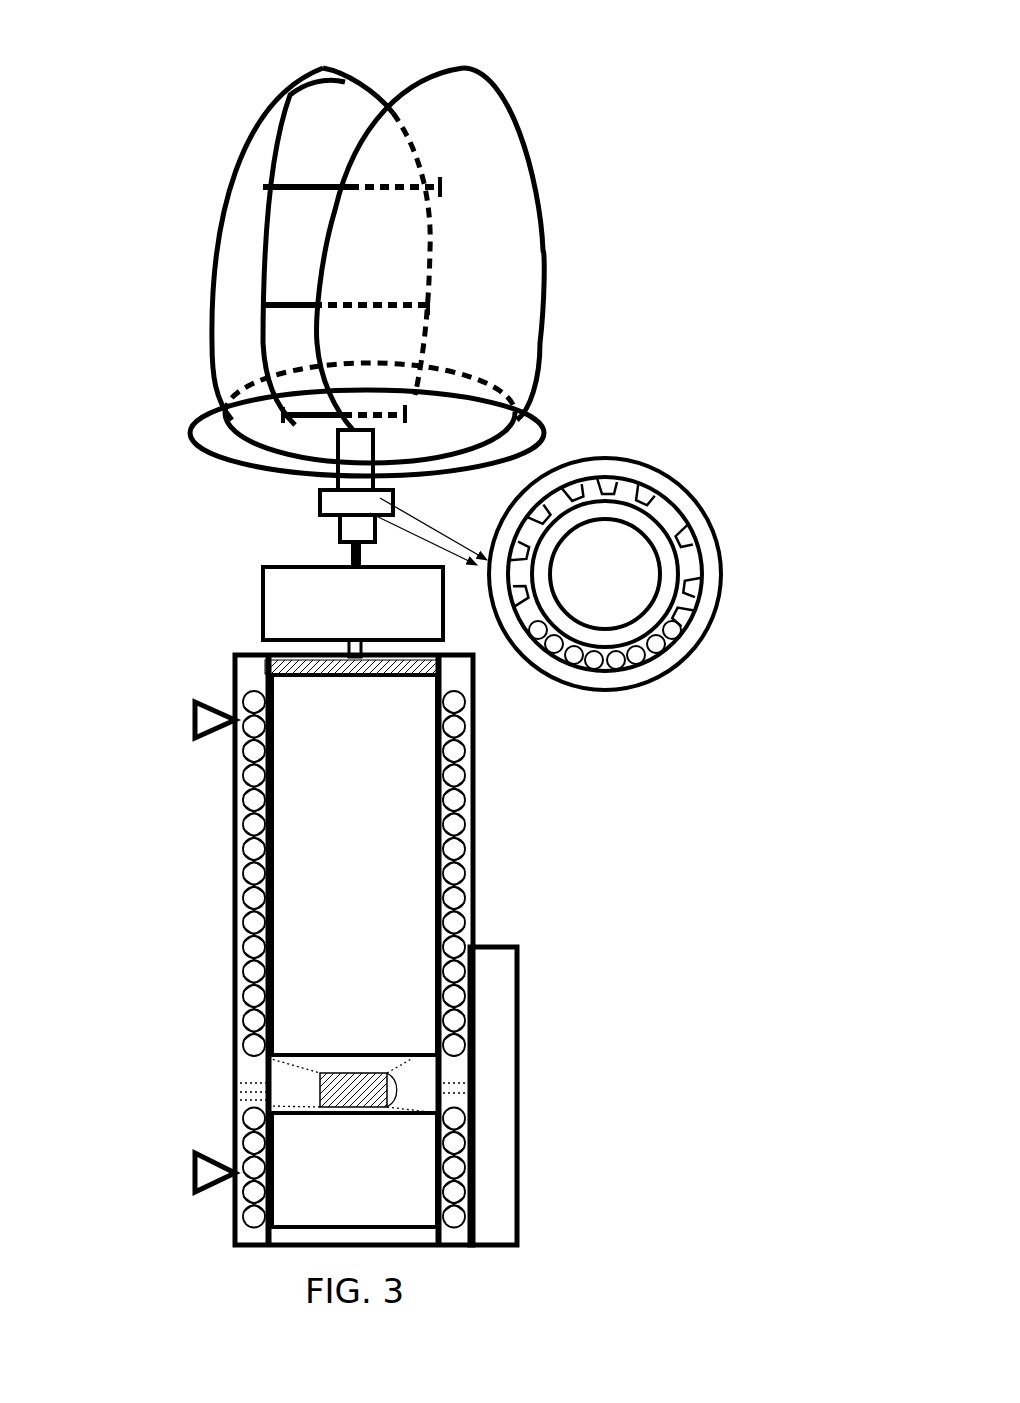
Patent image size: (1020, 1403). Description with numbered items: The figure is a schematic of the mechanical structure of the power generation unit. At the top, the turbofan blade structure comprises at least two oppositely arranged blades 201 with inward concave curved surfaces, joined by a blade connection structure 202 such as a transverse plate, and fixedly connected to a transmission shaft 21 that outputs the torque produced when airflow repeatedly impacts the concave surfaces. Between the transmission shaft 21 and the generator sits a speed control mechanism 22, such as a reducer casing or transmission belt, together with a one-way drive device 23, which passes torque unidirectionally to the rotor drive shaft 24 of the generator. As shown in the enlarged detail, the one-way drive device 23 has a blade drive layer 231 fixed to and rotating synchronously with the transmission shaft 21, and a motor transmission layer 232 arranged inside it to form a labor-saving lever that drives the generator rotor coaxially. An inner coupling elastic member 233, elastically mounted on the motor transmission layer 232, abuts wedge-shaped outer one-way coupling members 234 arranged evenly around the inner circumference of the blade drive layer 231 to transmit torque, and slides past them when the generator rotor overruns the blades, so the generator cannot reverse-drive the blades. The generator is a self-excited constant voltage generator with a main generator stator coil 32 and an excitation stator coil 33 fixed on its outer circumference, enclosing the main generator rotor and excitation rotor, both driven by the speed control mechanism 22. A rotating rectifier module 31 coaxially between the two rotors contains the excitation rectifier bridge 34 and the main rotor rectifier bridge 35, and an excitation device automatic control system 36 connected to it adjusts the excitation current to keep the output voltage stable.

The blade 201 is at (495, 190).
The blade connection structure 202 is at (282, 298).
The transmission shaft 21 is at (323, 458).
The speed control mechanism 22 is at (263, 625).
The one-way drive device 23 is at (494, 590).
The blade drive layer 231 is at (568, 670).
The motor transmission layer 232 is at (623, 505).
The inner coupling elastic member 233 is at (680, 610).
The outer one-way coupling member 234 is at (683, 540).
The rotor drive shaft of the generator 24 is at (357, 555).
The rotating rectifier module 31 is at (323, 1092).
The main generator stator coil 32 is at (250, 828).
The excitation stator coil 33 is at (253, 1197).
The excitation rectifier bridge 34 is at (343, 1087).
The main rotor rectifier bridge 35 is at (340, 1097).
The excitation device automatic control system 36 is at (492, 1213).